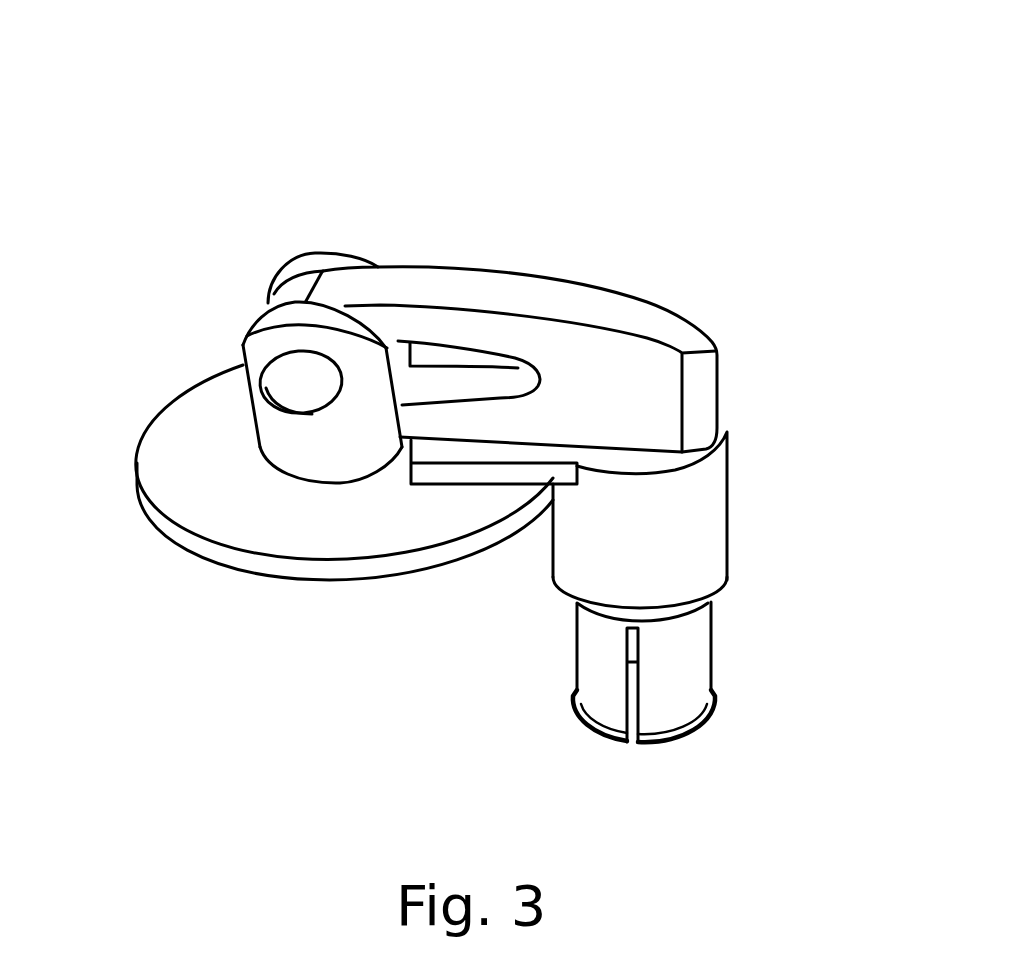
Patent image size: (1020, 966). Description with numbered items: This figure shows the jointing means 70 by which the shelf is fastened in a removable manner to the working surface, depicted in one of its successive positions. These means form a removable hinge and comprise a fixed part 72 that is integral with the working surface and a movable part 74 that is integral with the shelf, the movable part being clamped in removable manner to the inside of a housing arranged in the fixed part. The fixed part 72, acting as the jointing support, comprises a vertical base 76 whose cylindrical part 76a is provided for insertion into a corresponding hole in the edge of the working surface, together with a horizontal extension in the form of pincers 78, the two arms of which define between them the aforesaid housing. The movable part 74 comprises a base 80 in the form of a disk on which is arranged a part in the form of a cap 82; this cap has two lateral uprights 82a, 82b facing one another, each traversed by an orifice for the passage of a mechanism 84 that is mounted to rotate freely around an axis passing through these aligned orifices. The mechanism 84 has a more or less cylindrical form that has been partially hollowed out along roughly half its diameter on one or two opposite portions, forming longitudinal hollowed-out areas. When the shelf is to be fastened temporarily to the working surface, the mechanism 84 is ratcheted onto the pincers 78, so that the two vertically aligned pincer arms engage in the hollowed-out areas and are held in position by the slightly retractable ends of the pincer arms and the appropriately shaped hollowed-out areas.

The jointing means 70 is at (546, 116).
The fixed part 72 is at (770, 381).
The movable part 74 is at (137, 548).
The vertical base 76 is at (712, 507).
The cylindrical part 76a is at (688, 653).
The pincers 78 is at (615, 312).
The base 80 is at (295, 570).
The cap 82 is at (180, 294).
The lateral upright 82a is at (281, 285).
The lateral upright 82b is at (333, 260).
The mechanism 84 is at (295, 318).